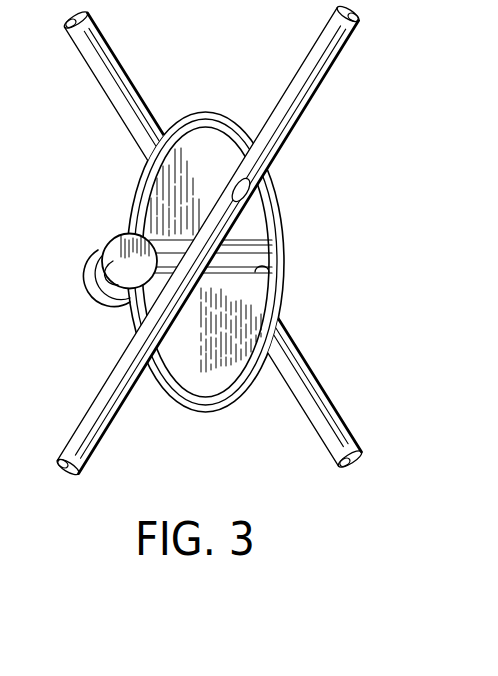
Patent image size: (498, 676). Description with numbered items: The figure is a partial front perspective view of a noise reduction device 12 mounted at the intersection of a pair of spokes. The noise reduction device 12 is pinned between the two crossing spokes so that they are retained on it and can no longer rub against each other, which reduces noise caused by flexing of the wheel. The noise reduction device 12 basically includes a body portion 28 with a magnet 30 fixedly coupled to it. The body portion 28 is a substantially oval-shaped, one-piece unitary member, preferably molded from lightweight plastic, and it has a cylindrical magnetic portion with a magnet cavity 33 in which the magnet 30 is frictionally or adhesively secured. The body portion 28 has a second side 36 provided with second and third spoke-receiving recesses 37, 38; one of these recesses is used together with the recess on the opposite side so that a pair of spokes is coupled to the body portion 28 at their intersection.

The noise reduction device 12 is at (206, 78).
The body portion 28 is at (295, 165).
The magnet 30 is at (113, 261).
The magnet cavity 33 is at (108, 297).
The second side 36 is at (160, 181).
The second spoke-receiving recess 37 is at (250, 185).
The third spoke-receiving recess 38 is at (283, 270).